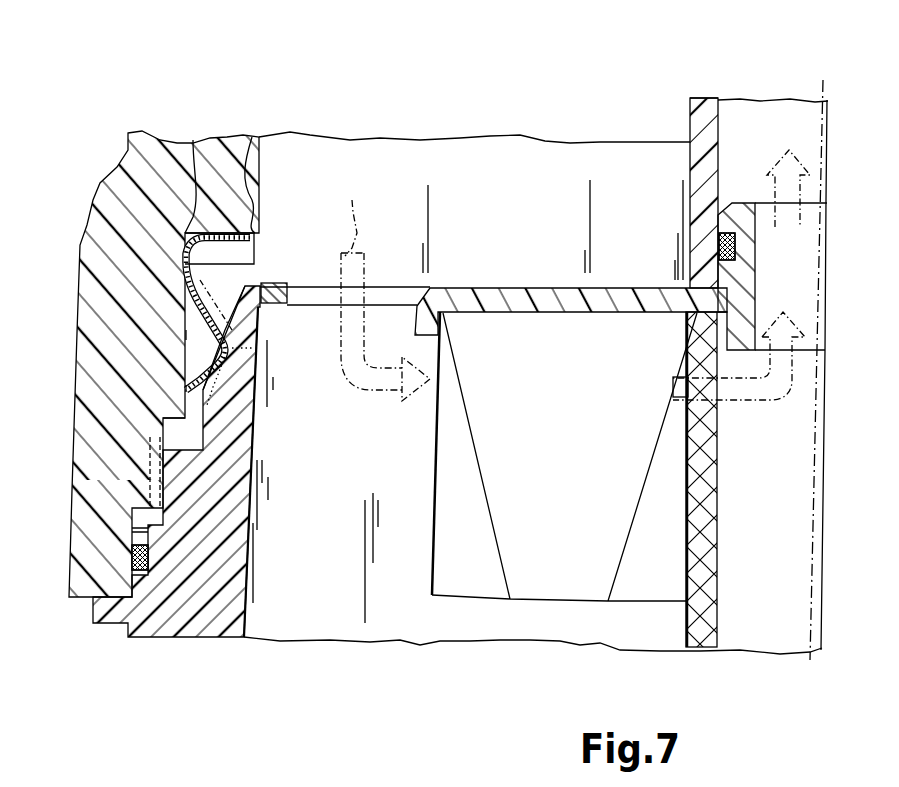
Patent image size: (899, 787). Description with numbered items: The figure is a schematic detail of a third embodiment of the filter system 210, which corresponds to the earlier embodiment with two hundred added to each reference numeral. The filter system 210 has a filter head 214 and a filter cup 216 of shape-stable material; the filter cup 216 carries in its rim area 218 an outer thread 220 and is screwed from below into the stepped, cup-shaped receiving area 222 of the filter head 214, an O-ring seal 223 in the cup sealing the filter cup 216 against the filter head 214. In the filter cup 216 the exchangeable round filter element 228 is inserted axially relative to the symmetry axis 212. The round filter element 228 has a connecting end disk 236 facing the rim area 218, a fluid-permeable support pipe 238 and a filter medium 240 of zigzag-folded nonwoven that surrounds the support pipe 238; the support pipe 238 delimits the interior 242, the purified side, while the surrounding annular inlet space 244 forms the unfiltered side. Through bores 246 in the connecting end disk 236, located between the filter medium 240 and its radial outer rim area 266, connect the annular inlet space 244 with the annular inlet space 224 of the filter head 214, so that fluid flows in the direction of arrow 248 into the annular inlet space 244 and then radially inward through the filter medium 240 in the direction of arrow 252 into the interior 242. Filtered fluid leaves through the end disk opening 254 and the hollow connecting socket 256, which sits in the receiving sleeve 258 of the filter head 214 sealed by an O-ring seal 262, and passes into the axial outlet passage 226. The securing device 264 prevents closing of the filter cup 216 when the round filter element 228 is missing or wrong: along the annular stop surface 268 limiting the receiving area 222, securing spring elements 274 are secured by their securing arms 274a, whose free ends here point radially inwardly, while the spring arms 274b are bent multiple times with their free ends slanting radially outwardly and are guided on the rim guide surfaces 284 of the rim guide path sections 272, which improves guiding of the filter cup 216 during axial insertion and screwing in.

The filter system 210 is at (460, 117).
The symmetry axis 212 is at (823, 93).
The filter head 214 is at (118, 172).
The filter cup 216 is at (186, 613).
The rim area 218 is at (264, 432).
The outer thread 220 is at (150, 478).
The receiving area 222 is at (160, 433).
The O-ring seal 223 is at (130, 557).
The annular inlet space 224 is at (535, 207).
The outlet passage 226 is at (784, 128).
The round filter element 228 is at (733, 615).
The connecting end disk 236 is at (606, 286).
The support pipe 238 is at (700, 637).
The filter medium 240 is at (557, 577).
The interior 242 is at (792, 512).
The annular inlet space 244 is at (375, 468).
The through bores 246 is at (392, 297).
The arrow 248 is at (383, 285).
The arrow 252 is at (768, 402).
The end disk opening 254 is at (812, 298).
The connecting socket 256 is at (737, 217).
The receiving sleeve 258 is at (692, 114).
The O-ring seal 262 is at (735, 242).
The securing device 264 is at (190, 334).
The radial outer rim area 266 is at (265, 312).
The annular stop surface 268 is at (193, 140).
The rim guide path section 272 is at (236, 291).
The securing spring element 274 is at (178, 273).
The securing arm 274a is at (252, 137).
The spring arm 274b is at (180, 362).
The rim guide surface 284 is at (254, 265).